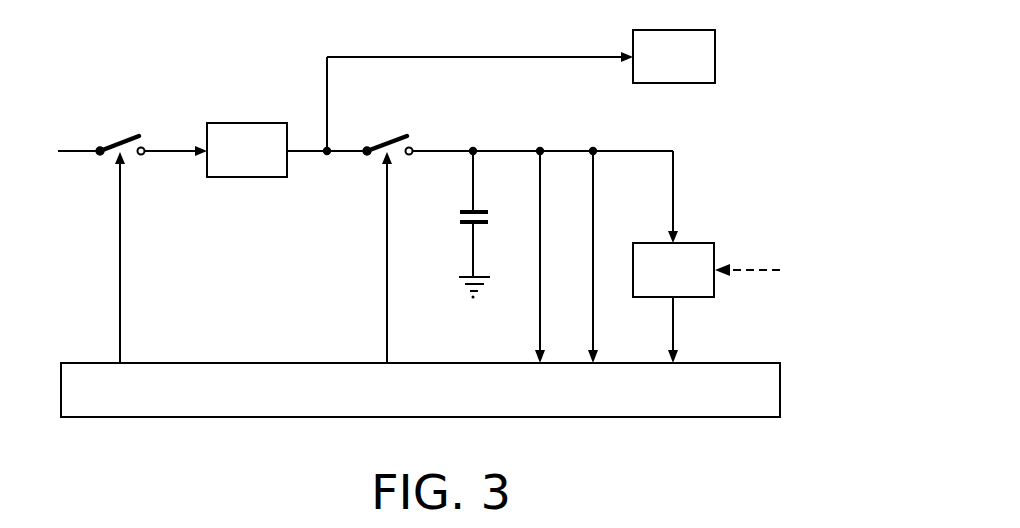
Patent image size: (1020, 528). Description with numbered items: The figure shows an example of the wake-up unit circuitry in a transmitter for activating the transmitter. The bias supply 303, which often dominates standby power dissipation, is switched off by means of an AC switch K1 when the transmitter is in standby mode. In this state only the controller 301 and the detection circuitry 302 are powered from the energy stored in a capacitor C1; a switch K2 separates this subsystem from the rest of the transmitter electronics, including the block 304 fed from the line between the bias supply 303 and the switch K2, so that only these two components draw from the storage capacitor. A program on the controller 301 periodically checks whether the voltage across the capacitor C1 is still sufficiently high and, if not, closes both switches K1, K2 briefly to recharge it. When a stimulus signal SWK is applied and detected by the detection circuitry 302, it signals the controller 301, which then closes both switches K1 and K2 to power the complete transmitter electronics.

The controller 301 is at (407, 402).
The detection circuitry 302 is at (657, 283).
The bias supply 303 is at (231, 162).
The load / output unit 304 is at (658, 70).
The AC switch K1 is at (124, 134).
The switch K2 is at (390, 134).
The capacitor C1 is at (460, 212).
The stimulus signal SWK is at (747, 257).